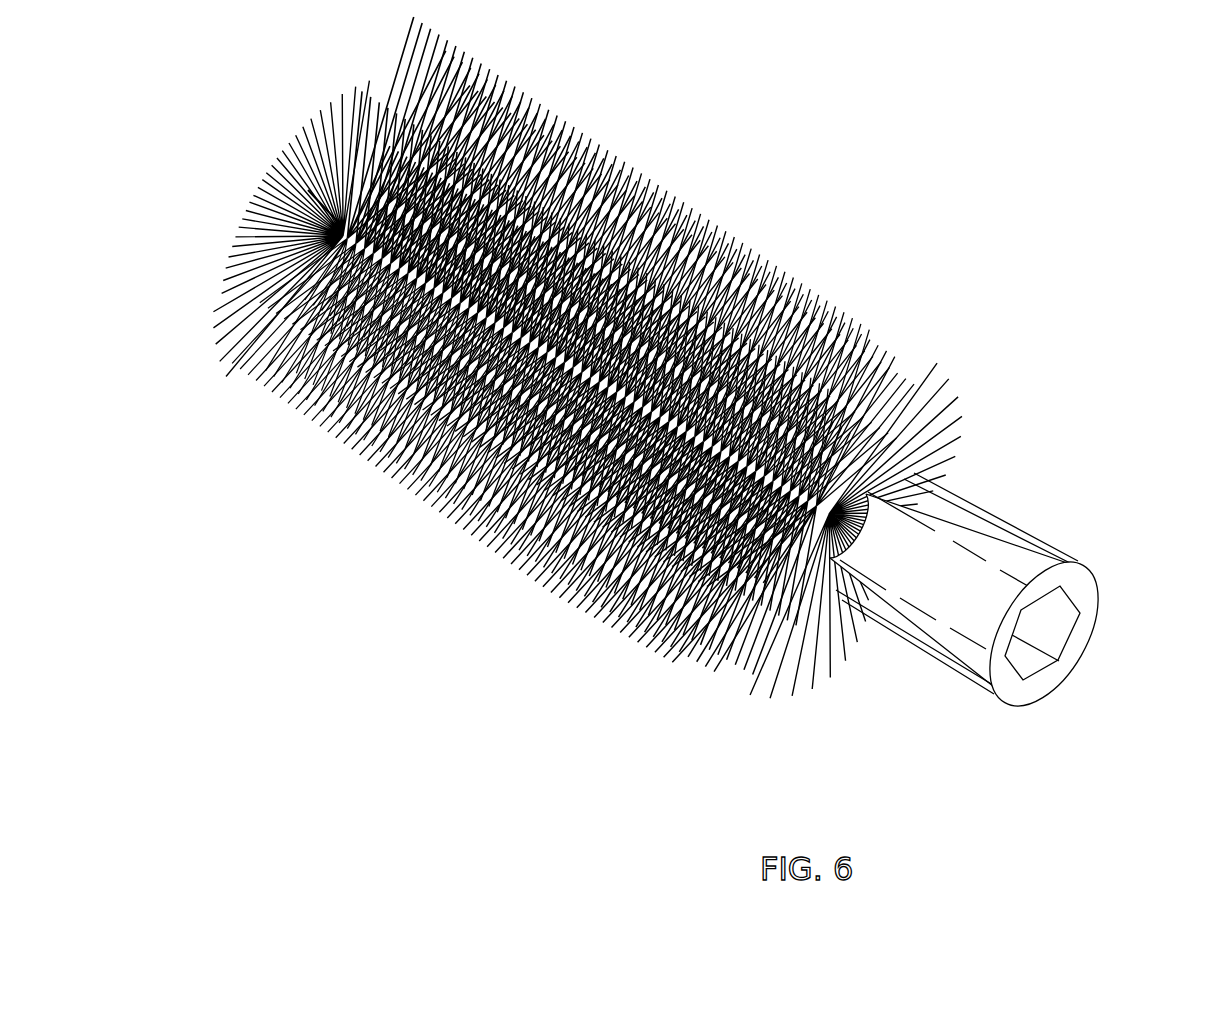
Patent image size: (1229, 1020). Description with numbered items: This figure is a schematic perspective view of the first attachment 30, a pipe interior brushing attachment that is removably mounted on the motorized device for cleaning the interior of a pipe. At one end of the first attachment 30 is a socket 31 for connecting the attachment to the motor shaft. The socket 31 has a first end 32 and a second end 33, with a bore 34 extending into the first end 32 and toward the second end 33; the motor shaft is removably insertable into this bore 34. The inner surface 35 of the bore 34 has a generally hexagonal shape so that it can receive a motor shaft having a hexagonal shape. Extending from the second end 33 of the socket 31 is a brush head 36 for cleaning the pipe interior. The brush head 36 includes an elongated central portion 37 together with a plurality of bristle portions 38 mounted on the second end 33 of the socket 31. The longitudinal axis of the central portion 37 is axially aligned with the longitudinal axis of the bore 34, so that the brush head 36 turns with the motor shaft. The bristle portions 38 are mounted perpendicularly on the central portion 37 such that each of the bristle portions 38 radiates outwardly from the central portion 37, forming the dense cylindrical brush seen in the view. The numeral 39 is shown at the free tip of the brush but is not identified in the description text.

The first attachment 30 is at (963, 232).
The socket 31 is at (993, 520).
The first end 32 is at (1078, 580).
The second end 33 is at (917, 457).
The bore 34 is at (1058, 627).
The inner surface 35 is at (1020, 643).
The brush head 36 is at (748, 253).
The elongated central portion 37 is at (594, 133).
The bristle portions 38 is at (592, 613).
The wire core end 39 is at (330, 213).